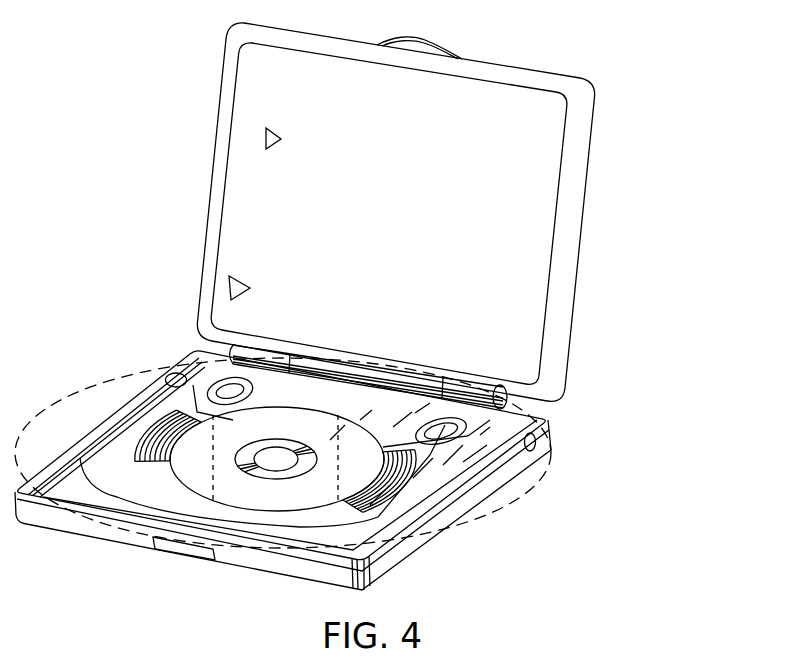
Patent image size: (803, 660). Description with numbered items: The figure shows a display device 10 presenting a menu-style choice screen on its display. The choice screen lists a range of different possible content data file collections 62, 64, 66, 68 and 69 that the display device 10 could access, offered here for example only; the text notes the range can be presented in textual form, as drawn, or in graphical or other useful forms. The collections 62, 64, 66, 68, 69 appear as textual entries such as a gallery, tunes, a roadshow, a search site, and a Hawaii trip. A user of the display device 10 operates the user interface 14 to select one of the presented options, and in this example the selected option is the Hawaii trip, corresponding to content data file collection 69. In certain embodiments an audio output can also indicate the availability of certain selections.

The display device 10 is at (378, 558).
The user interface 14 is at (532, 483).
The content data file collection 62 is at (557, 174).
The content data file collection 64 is at (390, 196).
The content data file collection 66 is at (425, 240).
The content data file collection 68 is at (470, 281).
The content data file collection 69 is at (380, 311).